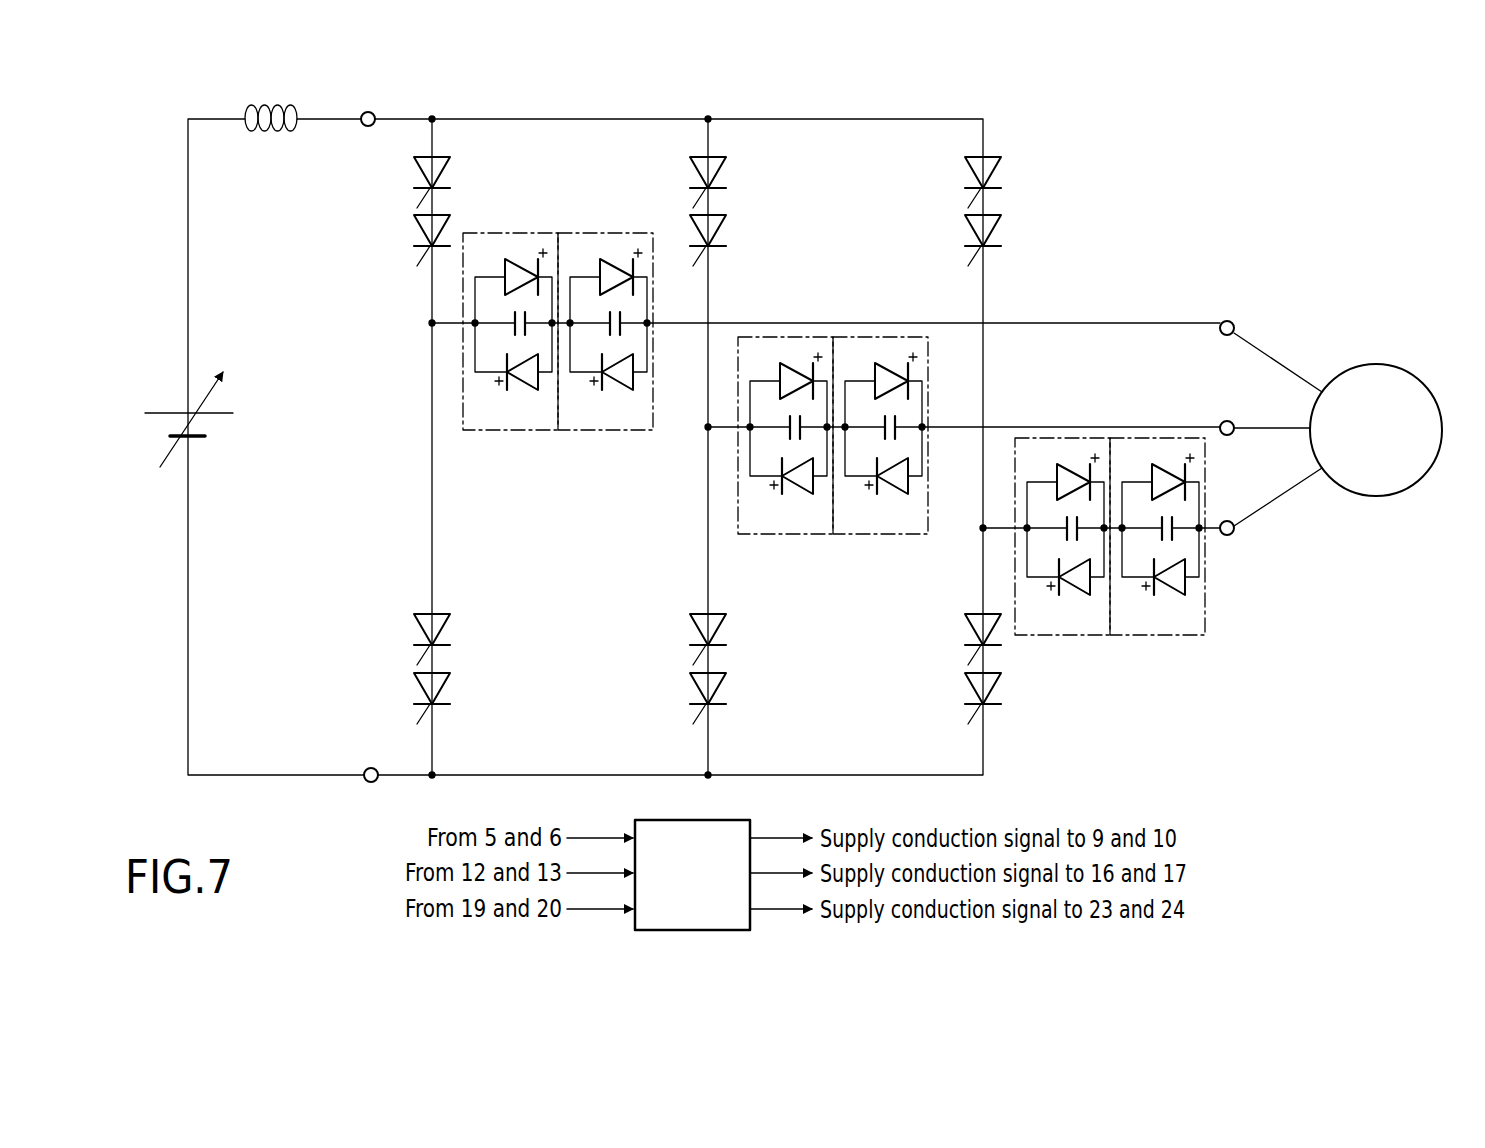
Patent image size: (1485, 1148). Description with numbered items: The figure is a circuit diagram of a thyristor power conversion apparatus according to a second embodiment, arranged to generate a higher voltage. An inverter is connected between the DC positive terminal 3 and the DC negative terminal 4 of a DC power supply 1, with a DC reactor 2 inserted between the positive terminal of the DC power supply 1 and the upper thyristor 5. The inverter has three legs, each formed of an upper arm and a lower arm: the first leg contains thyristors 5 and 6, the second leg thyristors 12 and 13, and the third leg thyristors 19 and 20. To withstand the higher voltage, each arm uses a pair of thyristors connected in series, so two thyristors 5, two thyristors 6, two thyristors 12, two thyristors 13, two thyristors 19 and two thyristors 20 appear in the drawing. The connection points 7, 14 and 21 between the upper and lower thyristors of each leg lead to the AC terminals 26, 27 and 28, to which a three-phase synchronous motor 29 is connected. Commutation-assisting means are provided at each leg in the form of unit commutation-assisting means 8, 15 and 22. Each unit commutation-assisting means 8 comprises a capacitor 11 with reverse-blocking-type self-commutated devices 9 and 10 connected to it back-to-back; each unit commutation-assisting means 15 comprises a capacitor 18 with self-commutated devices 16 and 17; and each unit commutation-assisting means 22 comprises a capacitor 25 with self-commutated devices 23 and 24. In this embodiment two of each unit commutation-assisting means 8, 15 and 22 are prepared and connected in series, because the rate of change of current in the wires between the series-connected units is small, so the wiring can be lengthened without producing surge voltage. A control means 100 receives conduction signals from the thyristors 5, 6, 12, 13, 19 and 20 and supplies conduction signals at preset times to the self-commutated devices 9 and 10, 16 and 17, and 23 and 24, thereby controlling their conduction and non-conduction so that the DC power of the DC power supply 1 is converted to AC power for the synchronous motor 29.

The DC power supply 1 is at (212, 423).
The DC reactor 2 is at (270, 133).
The DC positive terminal 3 is at (368, 111).
The DC negative terminal 4 is at (371, 767).
The thyristor 5 is at (414, 172).
The thyristor 6 is at (448, 630).
The connection point 7 is at (430, 323).
The unit commutation-assisting means 8 is at (523, 431).
The reverse-blocking-type self-commutated device 9 is at (508, 285).
The reverse-blocking-type self-commutated device 10 is at (522, 386).
The capacitor 11 is at (512, 331).
The thyristor 12 is at (724, 172).
The thyristor 13 is at (724, 630).
The connection point 14 is at (708, 427).
The unit commutation-assisting means 15 is at (753, 535).
The reverse-blocking-type self-commutated device 16 is at (783, 389).
The reverse-blocking-type self-commutated device 17 is at (797, 490).
The capacitor 18 is at (787, 435).
The thyristor 19 is at (999, 172).
The thyristor 20 is at (967, 630).
The connection point 21 is at (983, 528).
The unit commutation-assisting means 22 is at (1030, 636).
The reverse-blocking-type self-commutated device 23 is at (1060, 490).
The reverse-blocking-type self-commutated device 24 is at (1074, 591).
The capacitor 25 is at (1064, 536).
The AC terminal 26 is at (1227, 336).
The AC terminal 27 is at (1235, 424).
The AC terminal 28 is at (1228, 536).
The three-phase synchronous motor 29 is at (1384, 366).
The control means 100 is at (708, 820).